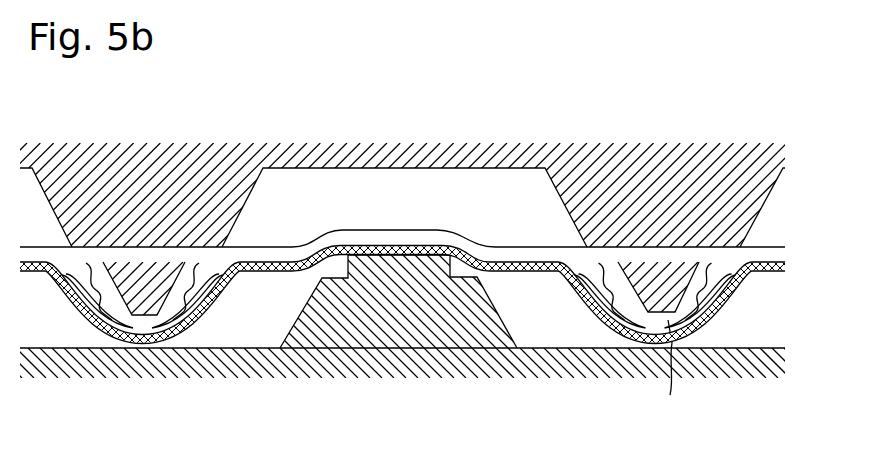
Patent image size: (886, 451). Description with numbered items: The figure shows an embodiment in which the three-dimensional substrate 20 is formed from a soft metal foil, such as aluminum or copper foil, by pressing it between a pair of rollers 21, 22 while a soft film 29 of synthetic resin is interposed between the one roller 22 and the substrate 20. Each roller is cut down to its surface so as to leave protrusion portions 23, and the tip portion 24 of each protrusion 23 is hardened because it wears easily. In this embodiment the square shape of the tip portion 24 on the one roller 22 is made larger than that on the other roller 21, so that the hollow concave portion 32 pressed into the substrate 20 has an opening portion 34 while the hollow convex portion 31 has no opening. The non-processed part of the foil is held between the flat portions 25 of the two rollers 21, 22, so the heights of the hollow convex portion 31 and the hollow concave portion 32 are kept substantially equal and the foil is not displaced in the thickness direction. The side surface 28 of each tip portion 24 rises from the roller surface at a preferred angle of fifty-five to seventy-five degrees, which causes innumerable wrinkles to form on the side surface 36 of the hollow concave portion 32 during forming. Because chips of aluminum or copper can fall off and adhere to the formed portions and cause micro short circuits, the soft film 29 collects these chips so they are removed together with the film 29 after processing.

The three-dimensional substrate 20 is at (250, 261).
The roller 21 is at (201, 152).
The roller 22 is at (388, 362).
The protrusion portion 23 is at (498, 335).
The tip portion 24 is at (438, 271).
The flat portion 25 is at (333, 267).
The side surface 28 is at (100, 326).
The soft film 29 is at (51, 265).
The hollow convex portion 31 is at (436, 243).
The hollow concave portion 32 is at (628, 318).
The opening portion 34 is at (145, 323).
The side surface 36 is at (618, 296).